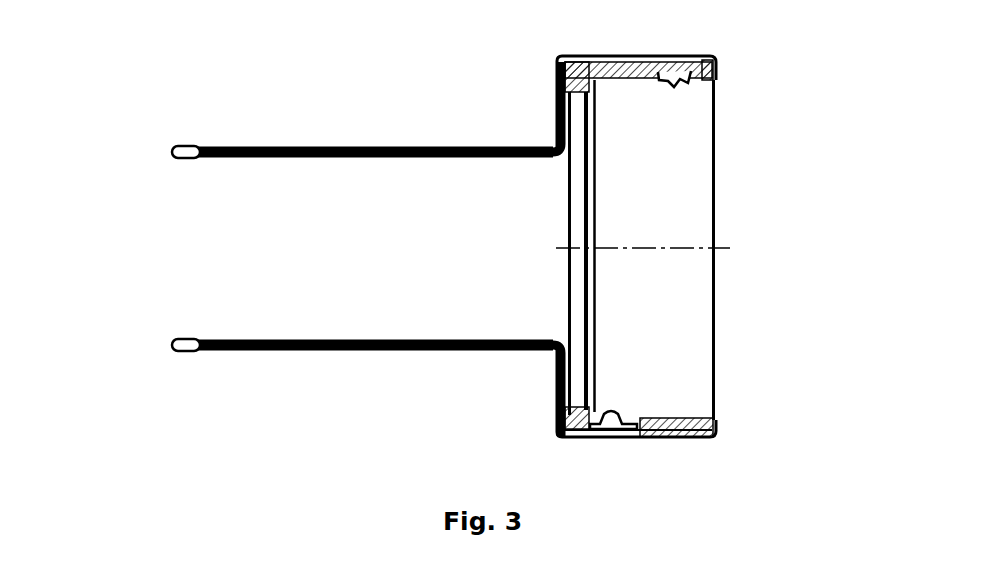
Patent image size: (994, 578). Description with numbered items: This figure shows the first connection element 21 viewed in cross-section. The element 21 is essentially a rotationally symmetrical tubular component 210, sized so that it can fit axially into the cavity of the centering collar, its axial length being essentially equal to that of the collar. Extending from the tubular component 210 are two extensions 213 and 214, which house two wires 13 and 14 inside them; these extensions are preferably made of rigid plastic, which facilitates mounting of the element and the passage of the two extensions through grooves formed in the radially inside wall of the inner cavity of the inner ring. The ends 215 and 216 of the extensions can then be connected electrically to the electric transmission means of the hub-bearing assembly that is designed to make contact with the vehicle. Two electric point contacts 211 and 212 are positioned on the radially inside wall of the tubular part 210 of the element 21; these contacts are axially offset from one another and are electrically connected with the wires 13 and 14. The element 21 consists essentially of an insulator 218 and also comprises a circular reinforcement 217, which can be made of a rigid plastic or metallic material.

The wire 13 is at (283, 150).
The wire 14 is at (328, 348).
The first connection element 21 is at (500, 128).
The tubular component 210 is at (620, 57).
The electric point contact 211 is at (643, 430).
The electric point contact 212 is at (680, 84).
The extension 213 is at (387, 148).
The extension 214 is at (432, 350).
The end 215 is at (172, 150).
The end 216 is at (170, 350).
The circular reinforcement 217 is at (583, 412).
The insulator 218 is at (703, 430).